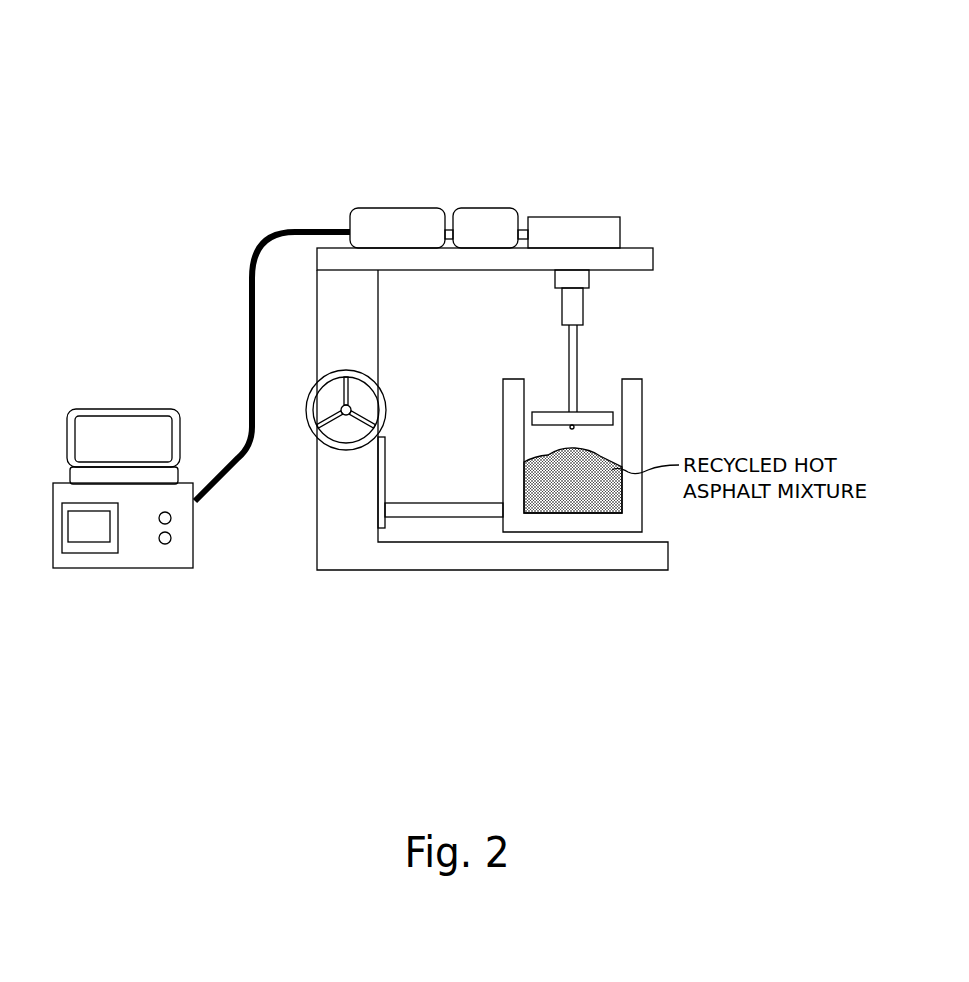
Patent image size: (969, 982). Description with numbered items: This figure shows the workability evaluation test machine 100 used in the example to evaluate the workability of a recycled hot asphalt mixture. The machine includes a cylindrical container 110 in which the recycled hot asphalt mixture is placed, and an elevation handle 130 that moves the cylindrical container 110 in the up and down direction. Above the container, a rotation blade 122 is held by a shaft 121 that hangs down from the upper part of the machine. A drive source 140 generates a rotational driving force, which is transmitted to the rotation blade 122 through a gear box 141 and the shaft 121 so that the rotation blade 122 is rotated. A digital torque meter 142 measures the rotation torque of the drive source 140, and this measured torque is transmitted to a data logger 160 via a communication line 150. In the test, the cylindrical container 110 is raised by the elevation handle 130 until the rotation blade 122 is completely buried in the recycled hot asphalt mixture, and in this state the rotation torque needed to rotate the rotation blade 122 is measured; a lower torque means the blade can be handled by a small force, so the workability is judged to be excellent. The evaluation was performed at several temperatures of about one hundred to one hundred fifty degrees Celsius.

The workability evaluation test machine 100 is at (205, 102).
The cylindrical container 110 is at (636, 516).
The shaft 121 is at (577, 362).
The rotation blade 122 is at (614, 418).
The elevation handle 130 is at (387, 406).
The drive source 140 is at (572, 223).
The gear box 141 is at (490, 215).
The digital torque meter 142 is at (400, 215).
The communication line 150 is at (251, 325).
The data logger 160 is at (66, 402).